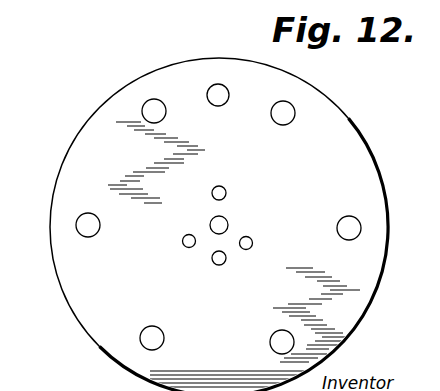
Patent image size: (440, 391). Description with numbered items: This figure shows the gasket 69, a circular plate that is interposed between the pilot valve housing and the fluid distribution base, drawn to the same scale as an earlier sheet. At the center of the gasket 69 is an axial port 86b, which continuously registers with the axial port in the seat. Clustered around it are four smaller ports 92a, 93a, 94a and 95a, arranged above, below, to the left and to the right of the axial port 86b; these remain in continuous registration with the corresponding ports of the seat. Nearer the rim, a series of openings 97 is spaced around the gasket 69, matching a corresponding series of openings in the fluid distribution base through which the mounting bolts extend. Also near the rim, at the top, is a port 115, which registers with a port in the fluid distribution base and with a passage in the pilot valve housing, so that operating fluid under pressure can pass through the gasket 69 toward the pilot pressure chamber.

The gasket 69 is at (86, 340).
The openings 97 is at (147, 99).
The port 115 is at (218, 84).
The port 92a is at (220, 186).
The axial port 86b is at (227, 218).
The port 94a is at (182, 242).
The port 95a is at (253, 243).
The port 93a is at (218, 265).